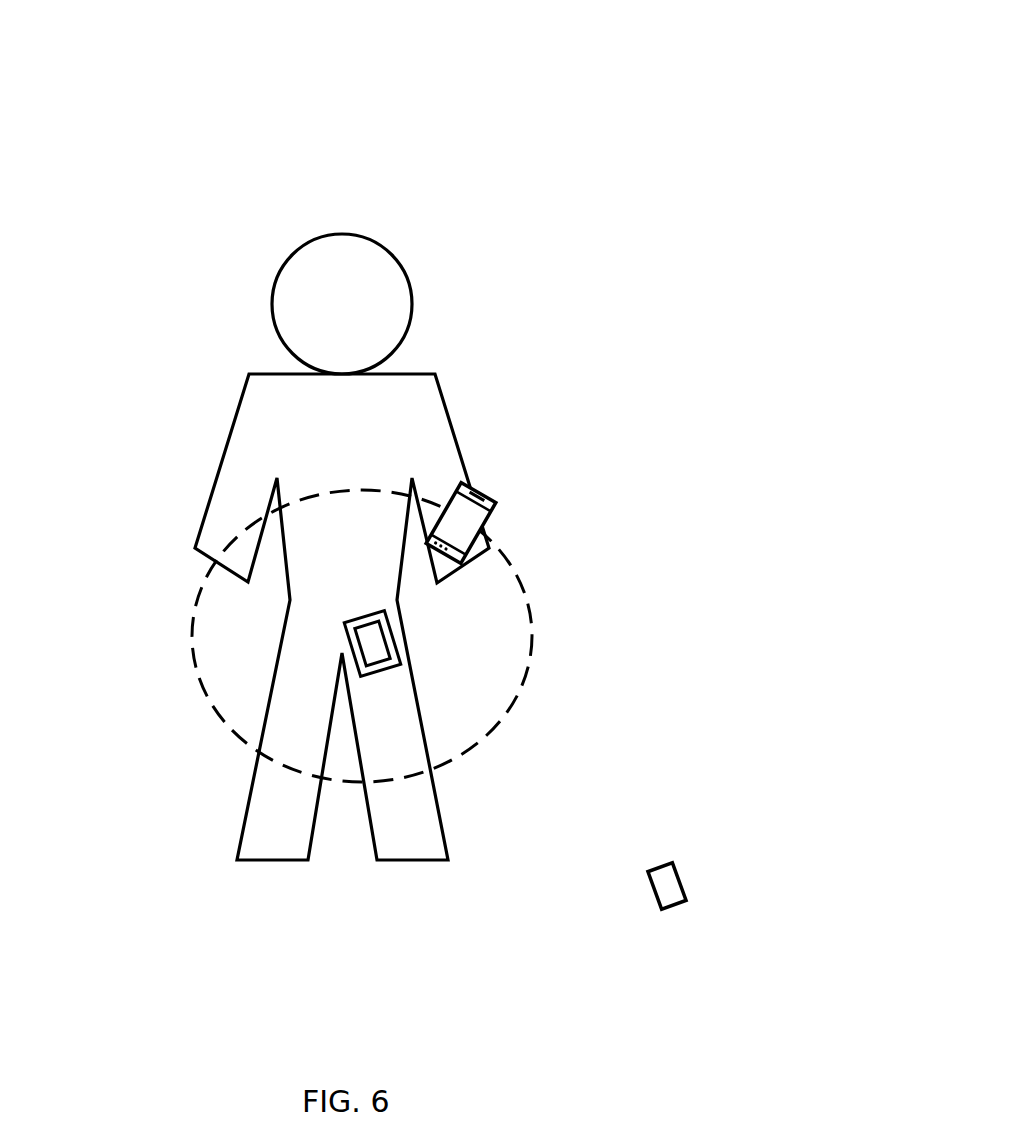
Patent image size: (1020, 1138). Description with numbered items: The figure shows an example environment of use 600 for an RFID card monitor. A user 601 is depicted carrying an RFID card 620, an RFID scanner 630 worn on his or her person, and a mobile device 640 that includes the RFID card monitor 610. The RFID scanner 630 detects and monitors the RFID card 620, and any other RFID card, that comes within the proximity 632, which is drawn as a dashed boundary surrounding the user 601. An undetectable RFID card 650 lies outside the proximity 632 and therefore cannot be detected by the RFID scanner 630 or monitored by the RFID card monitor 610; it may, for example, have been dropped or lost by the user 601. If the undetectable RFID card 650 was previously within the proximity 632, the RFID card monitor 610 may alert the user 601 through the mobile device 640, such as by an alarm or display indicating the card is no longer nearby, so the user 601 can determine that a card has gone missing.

The environment of use 600 is at (647, 63).
The user 601 is at (358, 547).
The RFID card monitor 610 is at (511, 523).
The RFID card 620 is at (479, 615).
The RFID scanner 630 is at (484, 626).
The proximity 632 is at (316, 636).
The mobile device 640 is at (532, 485).
The undetectable RFID card 650 is at (712, 877).